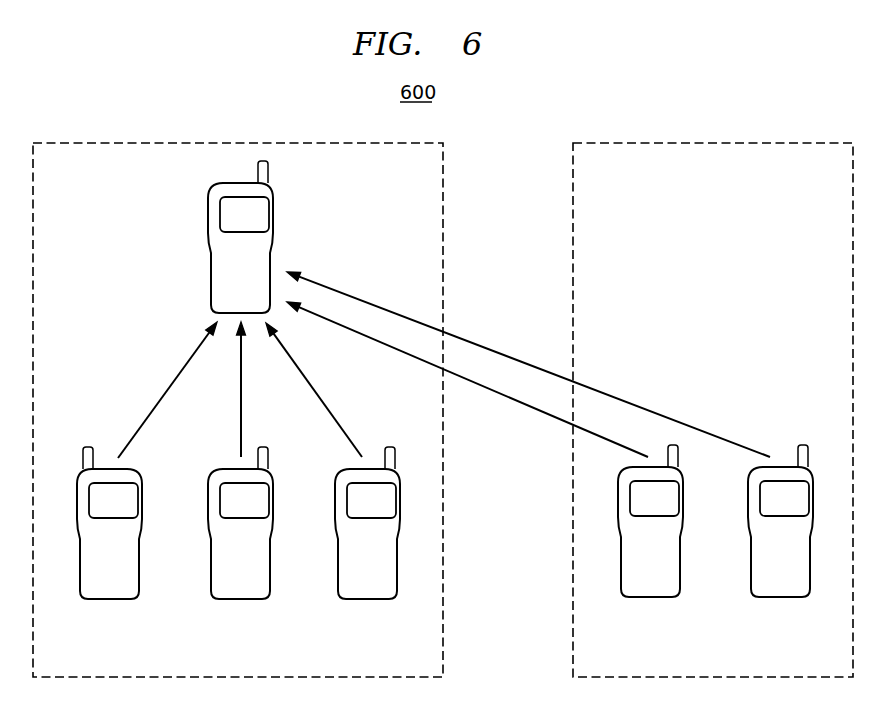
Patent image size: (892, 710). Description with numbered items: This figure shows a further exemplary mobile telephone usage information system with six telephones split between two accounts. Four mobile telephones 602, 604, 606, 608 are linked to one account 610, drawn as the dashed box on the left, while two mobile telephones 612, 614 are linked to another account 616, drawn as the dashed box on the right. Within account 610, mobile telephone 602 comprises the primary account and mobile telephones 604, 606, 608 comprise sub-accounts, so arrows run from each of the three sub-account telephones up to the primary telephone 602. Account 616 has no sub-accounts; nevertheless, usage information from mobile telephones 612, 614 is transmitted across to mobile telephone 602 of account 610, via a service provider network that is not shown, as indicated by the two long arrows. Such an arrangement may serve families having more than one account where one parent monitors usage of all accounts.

The mobile telephone 602 is at (273, 243).
The mobile telephone 604 is at (110, 599).
The mobile telephone 606 is at (241, 599).
The mobile telephone 608 is at (368, 599).
The account 610 is at (150, 143).
The mobile telephone 612 is at (651, 597).
The mobile telephone 614 is at (781, 597).
The account 616 is at (705, 142).